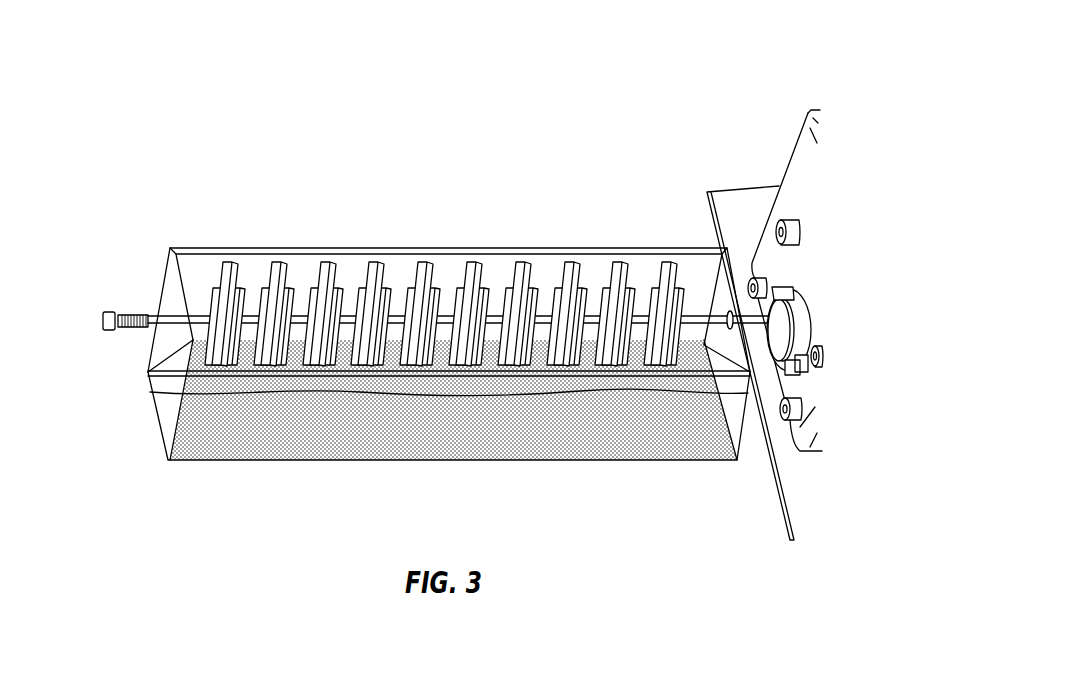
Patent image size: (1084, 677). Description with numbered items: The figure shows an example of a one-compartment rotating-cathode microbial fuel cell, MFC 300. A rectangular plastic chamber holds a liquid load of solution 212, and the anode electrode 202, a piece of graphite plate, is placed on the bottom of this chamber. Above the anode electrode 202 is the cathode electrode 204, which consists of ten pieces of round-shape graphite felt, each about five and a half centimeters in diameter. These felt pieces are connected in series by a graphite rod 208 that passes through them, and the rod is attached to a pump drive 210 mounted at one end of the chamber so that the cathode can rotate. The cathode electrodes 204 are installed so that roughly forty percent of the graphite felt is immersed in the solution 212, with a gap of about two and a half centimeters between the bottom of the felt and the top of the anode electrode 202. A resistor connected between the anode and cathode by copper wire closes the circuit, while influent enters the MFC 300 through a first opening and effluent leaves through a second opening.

The one-compartment rotating-cathode MFC 300 is at (137, 66).
The anode electrode 202 is at (343, 443).
The cathode electrode 204 is at (475, 262).
The graphite rod 208 is at (551, 318).
The pump drive 210 is at (793, 176).
The solution 212 is at (607, 443).